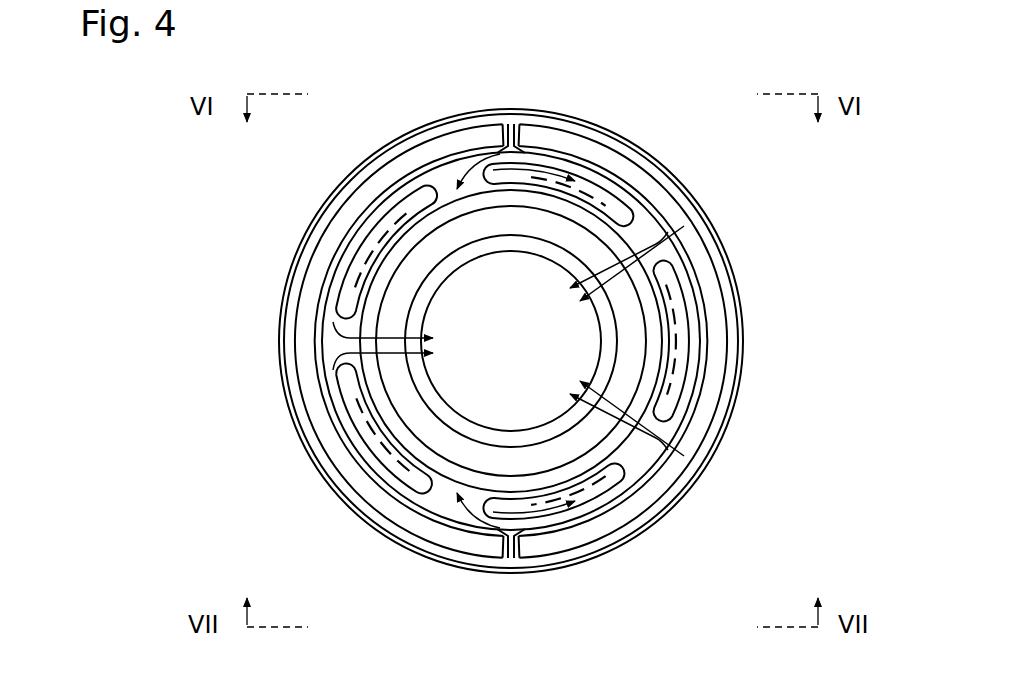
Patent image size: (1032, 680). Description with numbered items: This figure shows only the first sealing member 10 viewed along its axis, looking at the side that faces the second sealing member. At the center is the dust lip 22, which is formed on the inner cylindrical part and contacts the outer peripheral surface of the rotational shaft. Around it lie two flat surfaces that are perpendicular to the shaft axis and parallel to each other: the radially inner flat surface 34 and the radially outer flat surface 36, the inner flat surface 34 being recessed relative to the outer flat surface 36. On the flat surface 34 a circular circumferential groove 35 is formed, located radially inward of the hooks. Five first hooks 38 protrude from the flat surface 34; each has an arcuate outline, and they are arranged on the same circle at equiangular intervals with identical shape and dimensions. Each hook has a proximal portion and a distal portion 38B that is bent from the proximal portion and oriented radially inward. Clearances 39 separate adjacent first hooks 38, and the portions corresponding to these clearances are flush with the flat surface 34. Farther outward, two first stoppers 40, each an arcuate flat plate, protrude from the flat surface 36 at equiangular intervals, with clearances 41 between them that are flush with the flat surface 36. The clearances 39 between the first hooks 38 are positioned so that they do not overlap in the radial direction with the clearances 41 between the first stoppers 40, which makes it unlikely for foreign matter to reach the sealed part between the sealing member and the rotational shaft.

The first sealing member 10 is at (466, 100).
The dust lip 22 is at (438, 395).
The radially inner flat surface 34 is at (403, 540).
The circumferential groove 35 is at (437, 220).
The radially outer flat surface 36 is at (450, 553).
The first hooks 38 is at (367, 250).
The distal portion 38B is at (552, 190).
The clearances between first hooks 39 is at (437, 190).
The first stoppers 40 is at (367, 190).
The clearances between first stoppers 41 is at (510, 124).